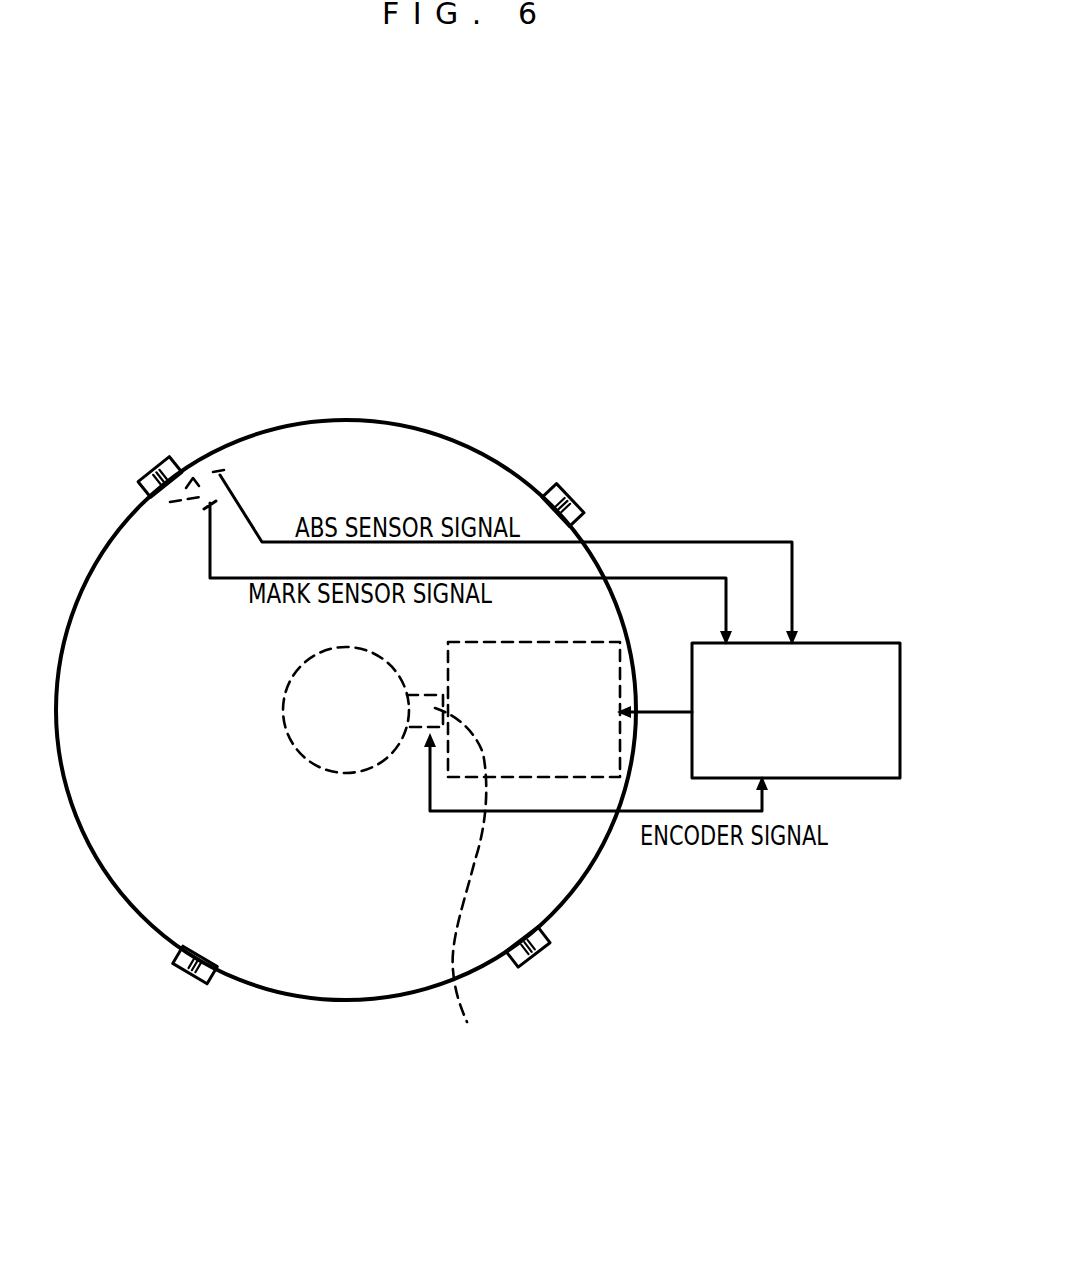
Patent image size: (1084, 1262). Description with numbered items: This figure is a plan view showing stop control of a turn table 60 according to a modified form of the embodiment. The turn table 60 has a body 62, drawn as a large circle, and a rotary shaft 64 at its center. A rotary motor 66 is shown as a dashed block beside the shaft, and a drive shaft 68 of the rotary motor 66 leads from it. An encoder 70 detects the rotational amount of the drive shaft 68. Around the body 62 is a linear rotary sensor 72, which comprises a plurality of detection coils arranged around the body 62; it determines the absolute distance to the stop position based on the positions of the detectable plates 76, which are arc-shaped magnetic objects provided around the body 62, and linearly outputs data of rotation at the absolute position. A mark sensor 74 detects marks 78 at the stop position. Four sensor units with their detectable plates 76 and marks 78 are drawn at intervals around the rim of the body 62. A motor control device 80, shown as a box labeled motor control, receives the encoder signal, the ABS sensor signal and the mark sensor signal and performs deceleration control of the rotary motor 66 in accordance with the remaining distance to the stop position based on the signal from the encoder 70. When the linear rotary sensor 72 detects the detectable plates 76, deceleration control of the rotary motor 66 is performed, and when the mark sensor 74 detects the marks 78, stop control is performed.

The turn table 60 is at (350, 1184).
The body 62 is at (382, 957).
The rotary shaft 64 is at (342, 777).
The rotary motor 66 is at (555, 777).
The drive shaft 68 is at (465, 885).
The encoder 70 is at (422, 753).
The linear rotary sensor 72 is at (178, 510).
The mark sensor 74 is at (222, 473).
The detectable plates 76 is at (172, 455).
The marks 78 is at (155, 468).
The motor control device 80 is at (853, 640).